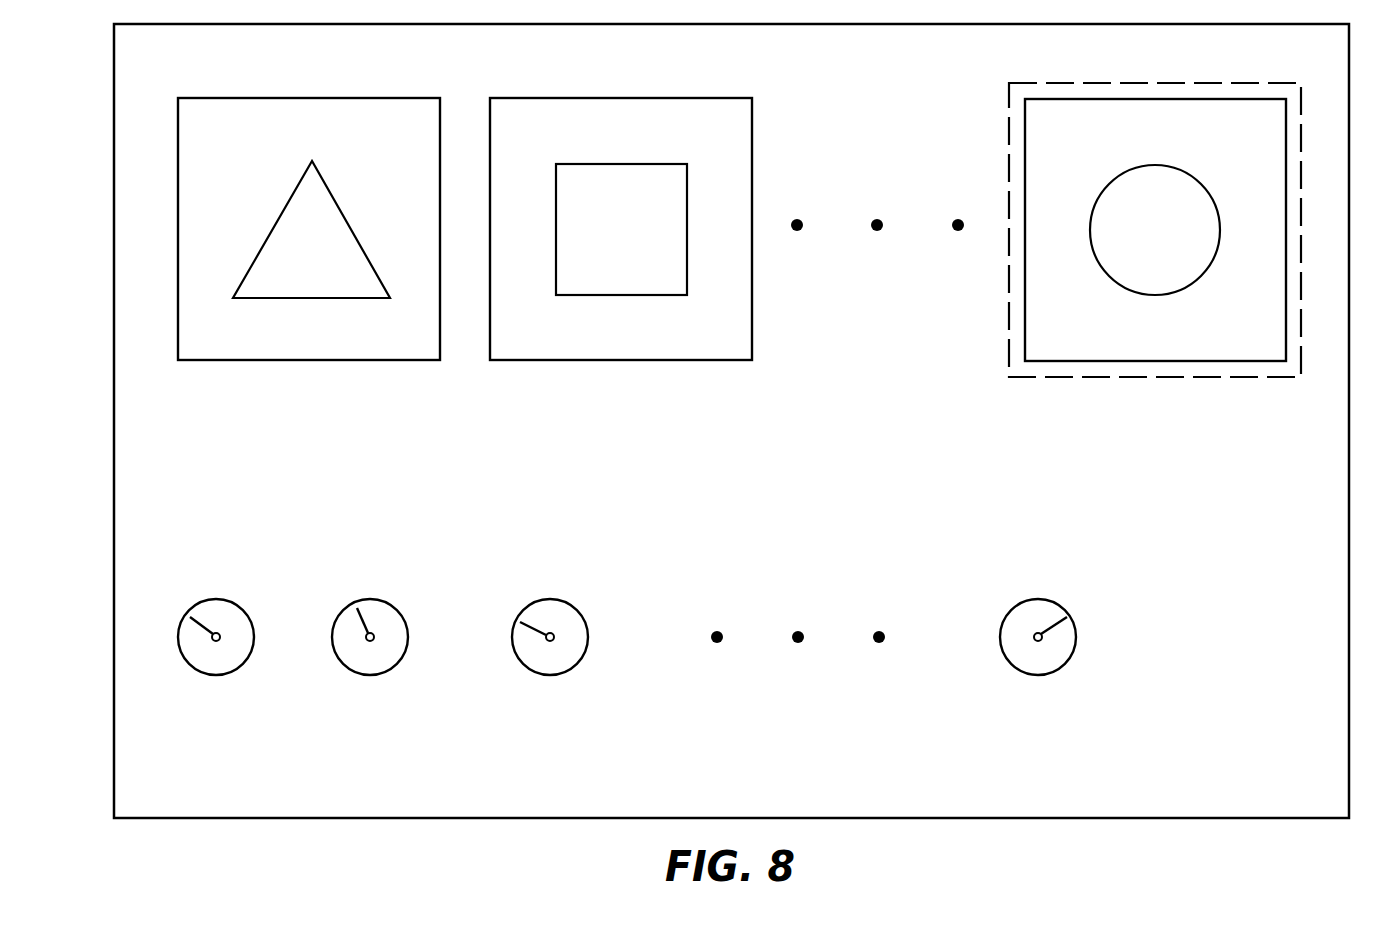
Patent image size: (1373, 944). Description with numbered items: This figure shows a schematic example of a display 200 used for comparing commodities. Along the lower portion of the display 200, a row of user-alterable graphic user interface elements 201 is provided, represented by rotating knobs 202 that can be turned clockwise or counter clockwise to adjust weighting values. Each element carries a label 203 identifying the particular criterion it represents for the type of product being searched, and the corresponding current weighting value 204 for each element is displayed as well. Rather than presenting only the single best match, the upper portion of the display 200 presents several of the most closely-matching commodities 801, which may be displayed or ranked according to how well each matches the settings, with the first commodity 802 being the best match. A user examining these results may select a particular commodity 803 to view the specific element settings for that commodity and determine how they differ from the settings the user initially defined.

The display 200 is at (1167, 486).
The row of user-alterable graphic user interface elements 201 is at (573, 639).
The rotating knob 202 is at (182, 621).
The label 203 is at (215, 712).
The current weighting value 204 is at (215, 566).
The most closely-matching commodities 801 is at (674, 215).
The first commodity 802 is at (288, 203).
The particular commodity 803 is at (1043, 83).